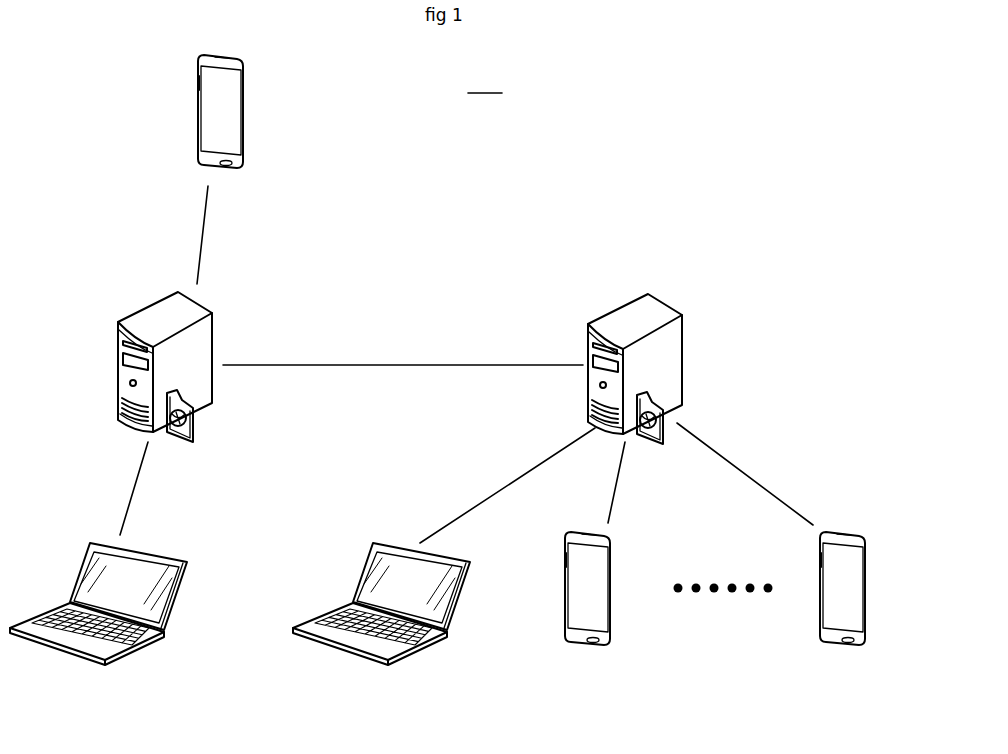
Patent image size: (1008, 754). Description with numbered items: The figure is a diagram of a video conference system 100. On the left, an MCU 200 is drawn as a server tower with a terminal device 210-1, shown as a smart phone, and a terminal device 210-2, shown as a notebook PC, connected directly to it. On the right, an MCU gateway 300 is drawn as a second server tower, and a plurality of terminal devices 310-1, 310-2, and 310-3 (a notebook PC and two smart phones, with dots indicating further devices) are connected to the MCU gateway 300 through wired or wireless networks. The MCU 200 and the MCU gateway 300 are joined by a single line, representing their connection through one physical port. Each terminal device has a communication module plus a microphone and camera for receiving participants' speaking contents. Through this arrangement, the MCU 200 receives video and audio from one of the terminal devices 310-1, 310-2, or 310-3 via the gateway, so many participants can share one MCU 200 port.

The video conference system 100 is at (485, 80).
The MCU 200 is at (207, 320).
The terminal device 210-1 is at (245, 113).
The terminal device 210-2 is at (130, 653).
The MCU gateway 300 is at (648, 302).
The terminal device 310-1 is at (413, 653).
The terminal device 310-2 is at (573, 643).
The terminal device 310-3 is at (825, 645).